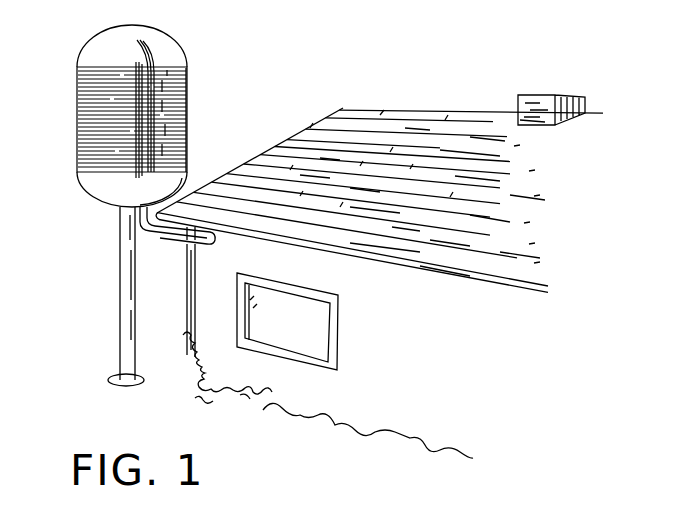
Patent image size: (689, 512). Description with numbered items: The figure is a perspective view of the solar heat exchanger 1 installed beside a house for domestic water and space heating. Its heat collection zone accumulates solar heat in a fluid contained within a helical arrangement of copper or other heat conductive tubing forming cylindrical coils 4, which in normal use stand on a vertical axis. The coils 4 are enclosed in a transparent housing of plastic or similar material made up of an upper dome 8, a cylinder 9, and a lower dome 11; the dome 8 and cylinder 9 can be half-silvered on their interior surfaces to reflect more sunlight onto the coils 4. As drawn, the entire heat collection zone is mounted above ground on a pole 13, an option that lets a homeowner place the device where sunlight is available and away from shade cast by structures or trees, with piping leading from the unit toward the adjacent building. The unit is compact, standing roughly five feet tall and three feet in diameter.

The solar heat exchanger 1 is at (197, 52).
The cylindrical coils 4 is at (163, 100).
The upper dome 8 is at (88, 52).
The cylinder 9 is at (188, 125).
The lower dome 11 is at (92, 185).
The pole 13 is at (120, 265).